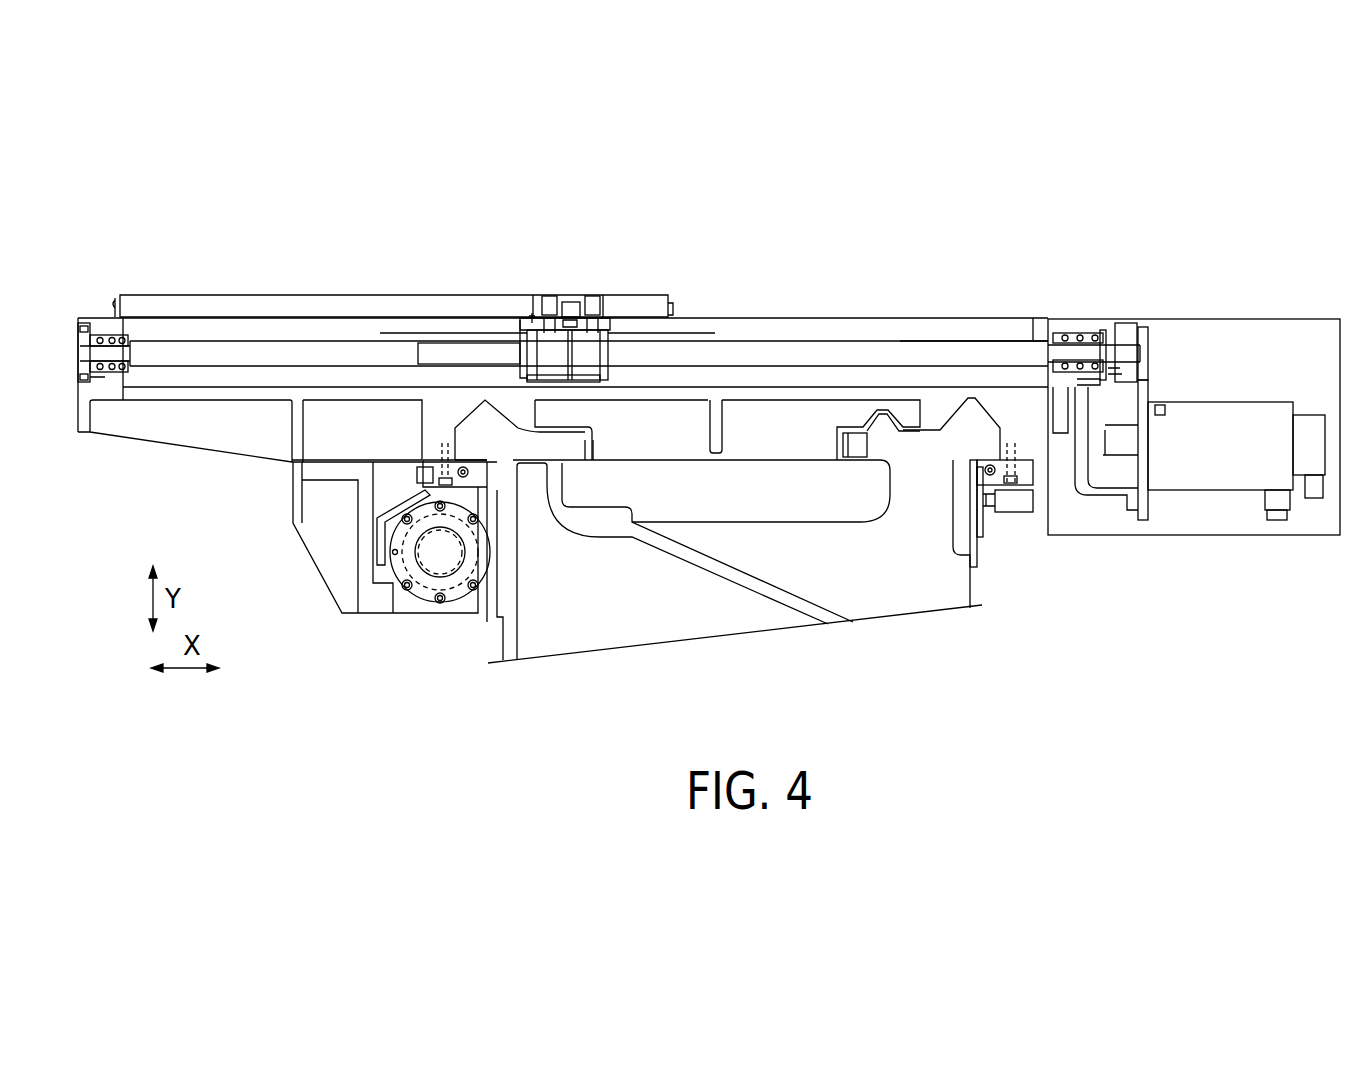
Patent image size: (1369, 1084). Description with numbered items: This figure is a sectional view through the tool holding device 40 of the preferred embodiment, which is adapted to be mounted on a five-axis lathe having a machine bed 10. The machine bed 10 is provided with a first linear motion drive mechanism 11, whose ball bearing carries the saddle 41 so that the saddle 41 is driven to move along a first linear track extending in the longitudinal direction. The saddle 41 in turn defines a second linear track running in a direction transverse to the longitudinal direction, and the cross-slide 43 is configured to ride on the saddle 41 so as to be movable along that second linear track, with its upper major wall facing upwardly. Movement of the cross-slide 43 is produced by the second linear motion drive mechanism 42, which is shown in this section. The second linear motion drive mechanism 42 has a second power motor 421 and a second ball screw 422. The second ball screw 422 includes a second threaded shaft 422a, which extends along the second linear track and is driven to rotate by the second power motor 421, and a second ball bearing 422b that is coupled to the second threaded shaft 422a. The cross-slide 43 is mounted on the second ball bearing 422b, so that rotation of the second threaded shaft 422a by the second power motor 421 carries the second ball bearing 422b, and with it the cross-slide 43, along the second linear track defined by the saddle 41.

The machine bed 10 is at (912, 588).
The first linear motion drive mechanism 11 is at (437, 553).
The tool holding device 40 is at (732, 293).
The saddle 41 is at (341, 395).
The second linear motion drive mechanism 42 is at (1263, 397).
The second power motor 421 is at (1203, 432).
The second ball screw 422 is at (860, 347).
The second threaded shaft 422a is at (955, 343).
The second ball bearing 422b is at (610, 330).
The cross-slide 43 is at (405, 298).